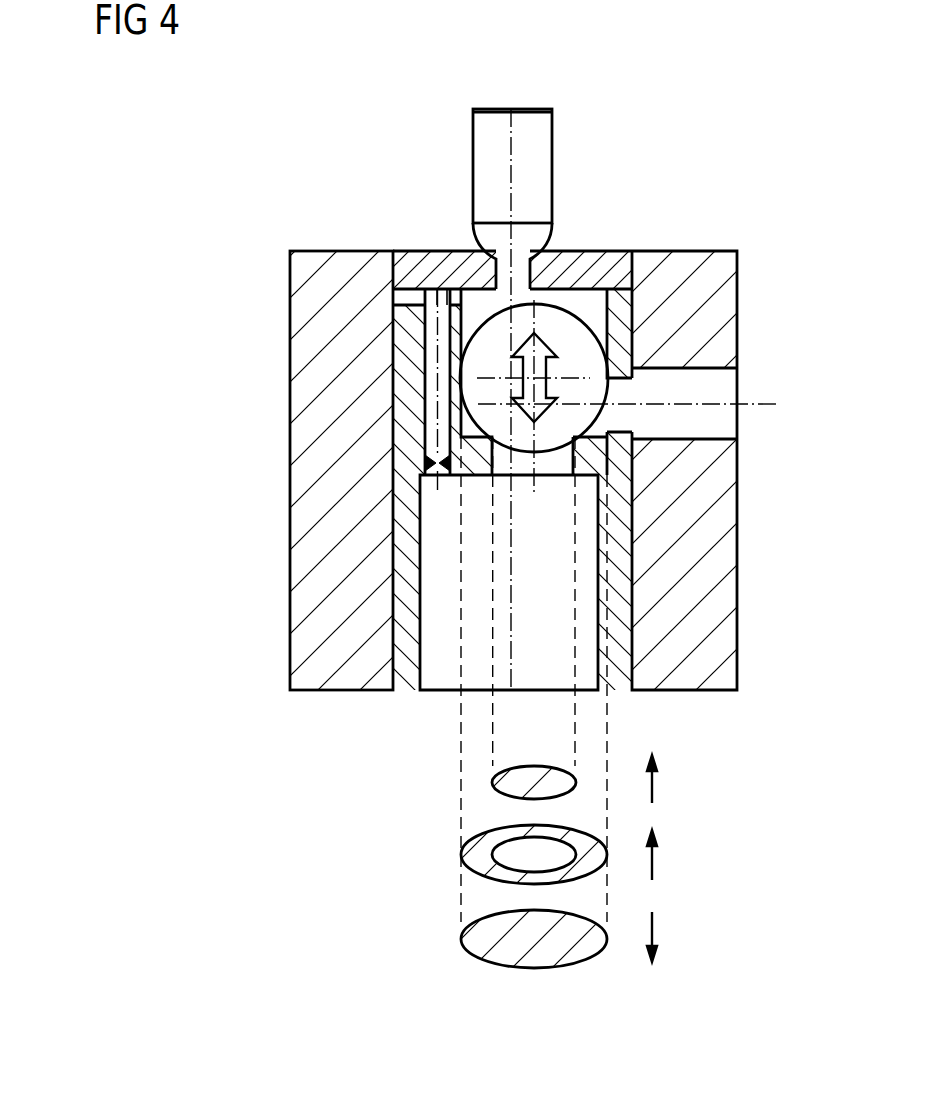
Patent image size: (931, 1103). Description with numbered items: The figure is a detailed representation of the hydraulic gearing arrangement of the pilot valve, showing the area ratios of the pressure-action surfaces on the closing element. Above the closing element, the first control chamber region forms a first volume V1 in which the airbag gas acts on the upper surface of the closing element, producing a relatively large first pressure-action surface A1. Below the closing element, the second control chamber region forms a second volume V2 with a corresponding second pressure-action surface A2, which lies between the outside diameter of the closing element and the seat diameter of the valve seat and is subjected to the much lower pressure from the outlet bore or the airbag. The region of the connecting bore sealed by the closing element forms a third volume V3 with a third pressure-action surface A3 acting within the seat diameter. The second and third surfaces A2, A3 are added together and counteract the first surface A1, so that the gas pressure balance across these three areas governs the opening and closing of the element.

The first volume V1 is at (480, 308).
The second volume V2 is at (480, 431).
The third volume V3 is at (503, 463).
The first pressure-action surface A1 is at (490, 940).
The second pressure-action surface A2 is at (482, 857).
The third pressure-action surface A3 is at (535, 782).